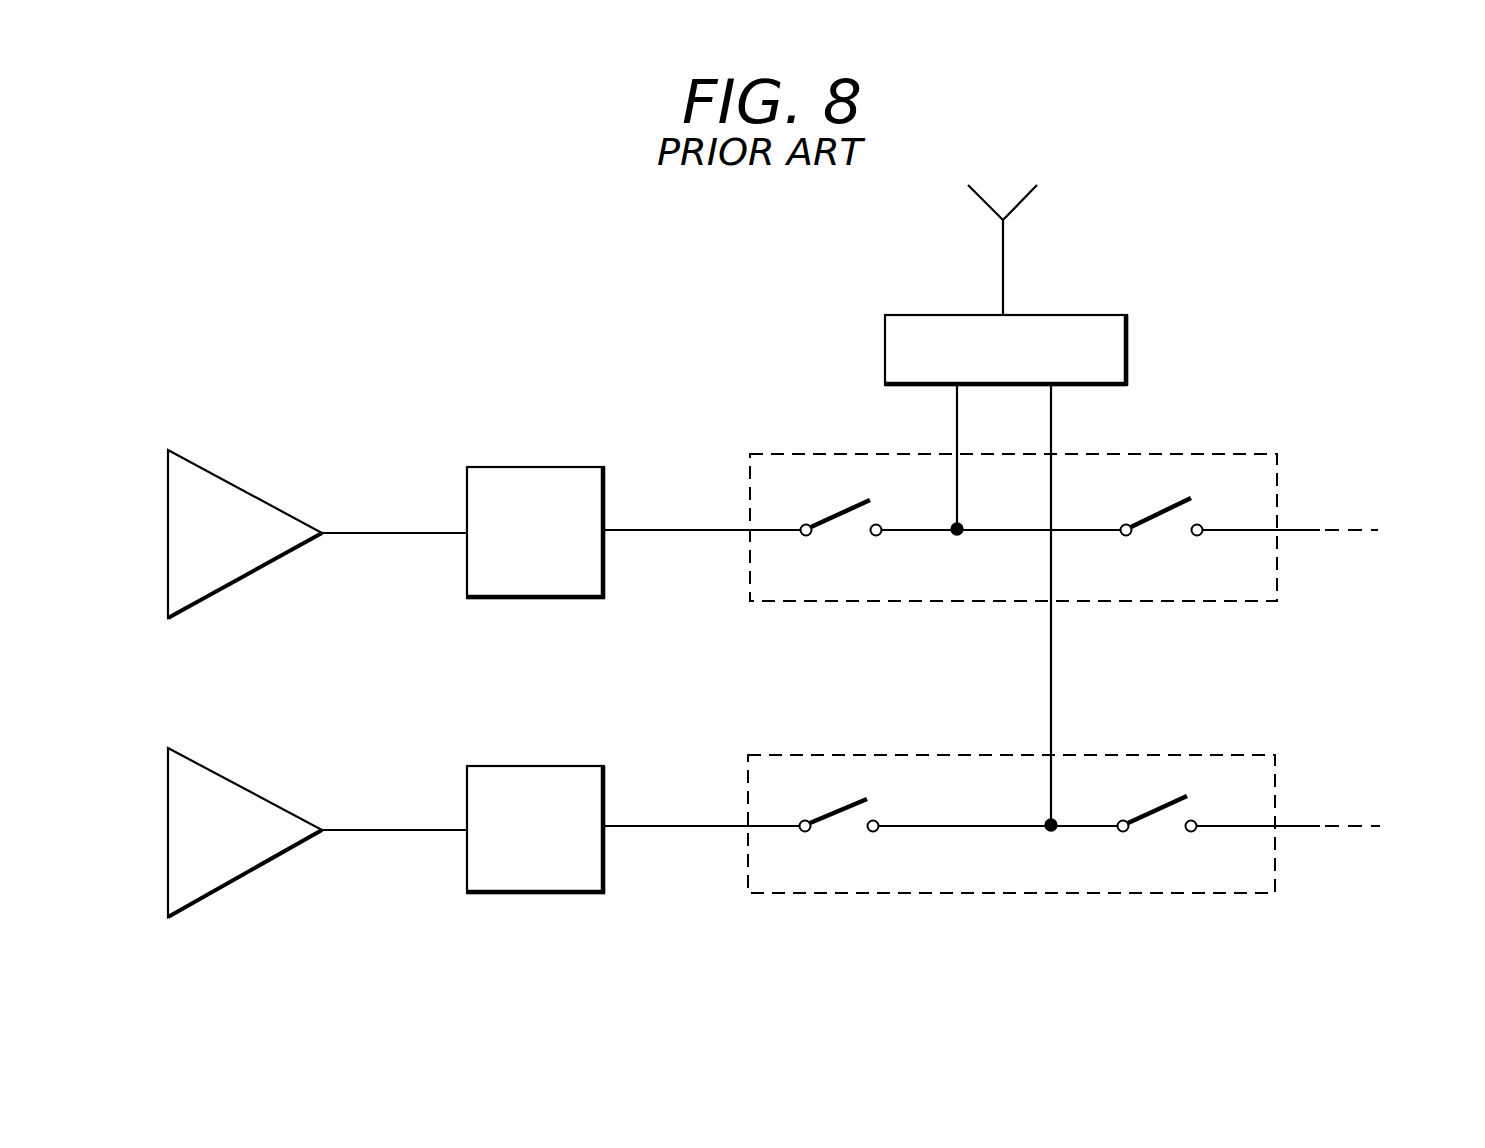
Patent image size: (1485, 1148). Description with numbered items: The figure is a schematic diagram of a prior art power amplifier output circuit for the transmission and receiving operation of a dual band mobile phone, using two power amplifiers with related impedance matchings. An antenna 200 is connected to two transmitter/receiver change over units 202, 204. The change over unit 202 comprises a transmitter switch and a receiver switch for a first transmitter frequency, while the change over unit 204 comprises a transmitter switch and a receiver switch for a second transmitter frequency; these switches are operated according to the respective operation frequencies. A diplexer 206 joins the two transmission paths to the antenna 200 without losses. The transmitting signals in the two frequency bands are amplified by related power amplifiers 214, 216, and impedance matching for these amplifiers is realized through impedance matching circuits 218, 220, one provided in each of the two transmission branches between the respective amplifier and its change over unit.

The antenna 200 is at (1018, 203).
The diplexer 206 is at (1128, 346).
The transmitter/receiver change over unit 202 is at (1277, 474).
The transmission/receiving change over unit 204 is at (1275, 776).
The power amplifier 214 is at (238, 487).
The power amplifier 216 is at (238, 787).
The impedance matching circuit 218 is at (530, 466).
The impedance matching circuit 220 is at (533, 765).